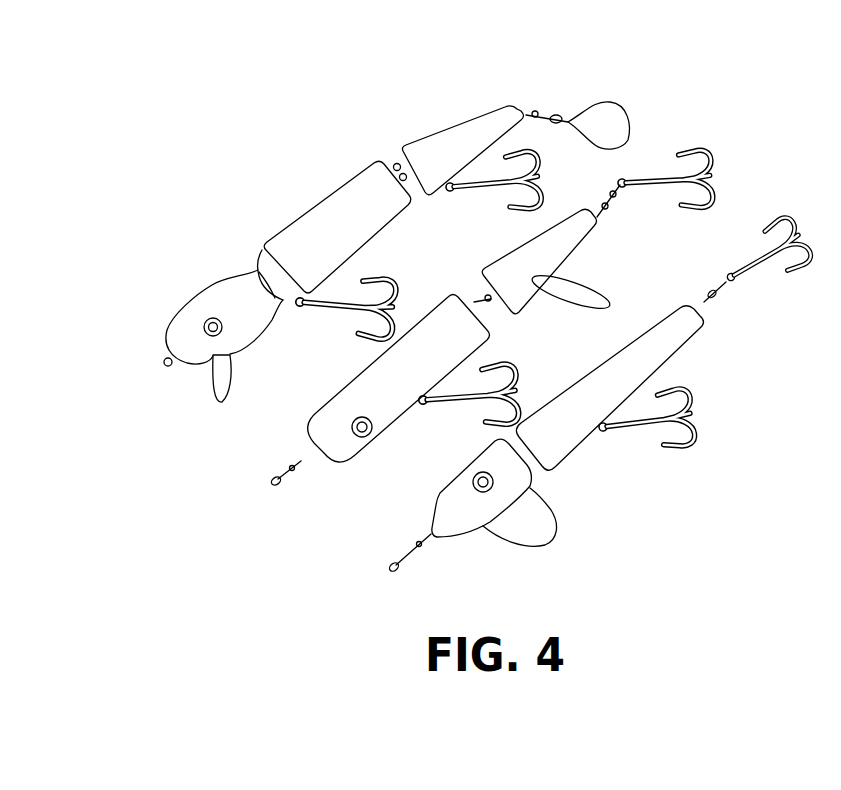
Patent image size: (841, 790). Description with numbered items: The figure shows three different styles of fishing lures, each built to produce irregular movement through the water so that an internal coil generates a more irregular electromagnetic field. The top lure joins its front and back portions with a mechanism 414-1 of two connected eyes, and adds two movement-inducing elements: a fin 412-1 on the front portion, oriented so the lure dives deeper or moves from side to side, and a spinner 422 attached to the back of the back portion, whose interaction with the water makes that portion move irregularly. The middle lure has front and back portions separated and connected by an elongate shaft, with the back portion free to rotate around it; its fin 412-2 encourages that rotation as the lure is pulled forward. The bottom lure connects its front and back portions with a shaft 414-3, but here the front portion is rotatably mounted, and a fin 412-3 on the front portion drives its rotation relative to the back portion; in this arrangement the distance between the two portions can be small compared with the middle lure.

The spinner 422 is at (662, 133).
The fin 412-1 is at (213, 392).
The fin 412-2 is at (604, 305).
The fin 412-3 is at (558, 533).
The mechanism 414-1 is at (399, 170).
The shaft 414-3 is at (530, 486).